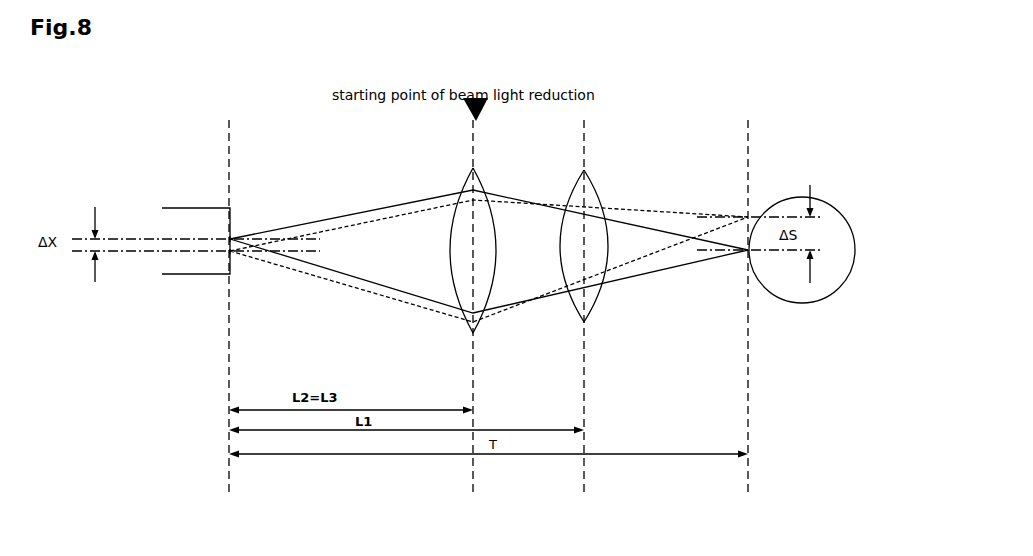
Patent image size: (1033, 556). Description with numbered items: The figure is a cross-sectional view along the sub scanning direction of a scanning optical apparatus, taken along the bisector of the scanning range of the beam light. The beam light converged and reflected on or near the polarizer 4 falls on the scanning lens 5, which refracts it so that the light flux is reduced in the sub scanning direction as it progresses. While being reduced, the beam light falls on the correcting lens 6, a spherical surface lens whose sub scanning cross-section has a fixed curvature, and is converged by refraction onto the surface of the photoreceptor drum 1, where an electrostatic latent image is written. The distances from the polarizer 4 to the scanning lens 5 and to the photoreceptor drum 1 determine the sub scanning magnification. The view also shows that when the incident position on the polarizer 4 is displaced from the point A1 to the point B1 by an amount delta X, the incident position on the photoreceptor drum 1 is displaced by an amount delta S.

The photoreceptor drum 1 is at (772, 207).
The polarizer 4 is at (175, 208).
The scanning lens 5 is at (488, 172).
The correcting lens 6 is at (605, 168).
The point A1 is at (239, 220).
The point B1 is at (238, 271).